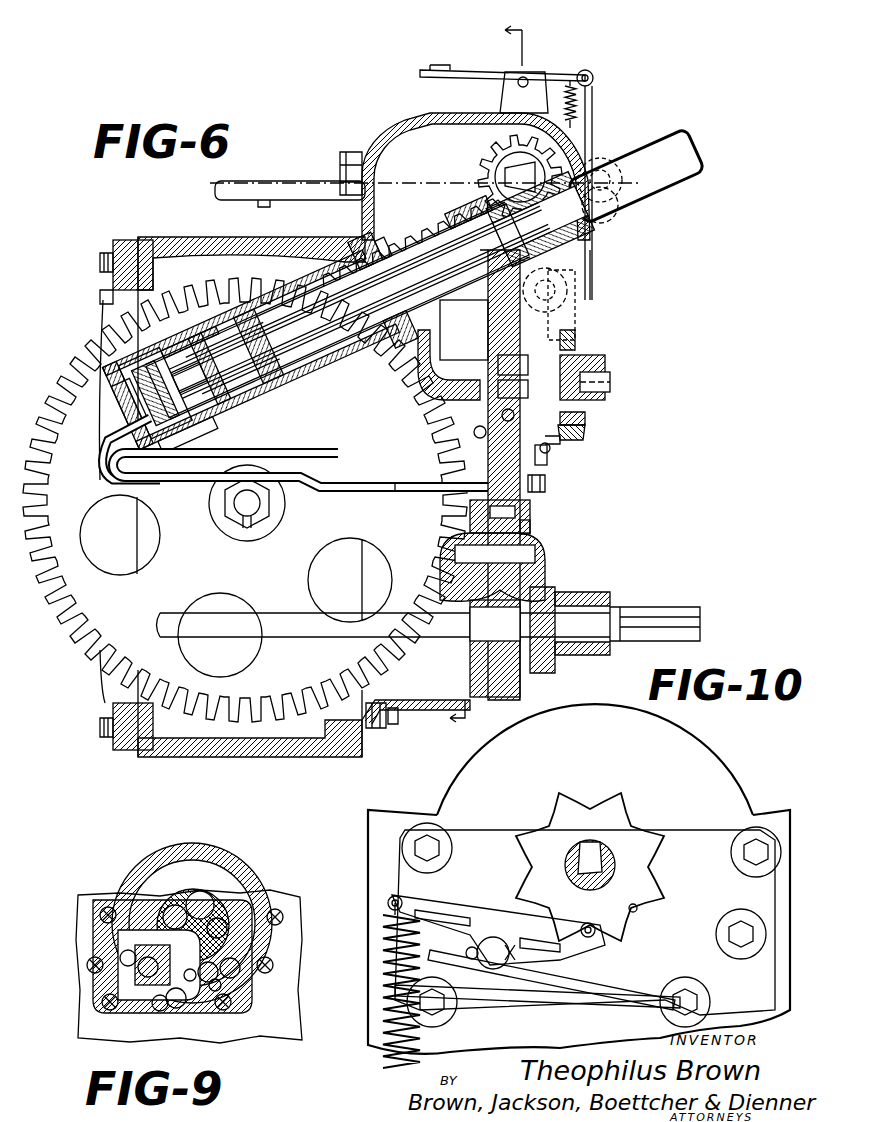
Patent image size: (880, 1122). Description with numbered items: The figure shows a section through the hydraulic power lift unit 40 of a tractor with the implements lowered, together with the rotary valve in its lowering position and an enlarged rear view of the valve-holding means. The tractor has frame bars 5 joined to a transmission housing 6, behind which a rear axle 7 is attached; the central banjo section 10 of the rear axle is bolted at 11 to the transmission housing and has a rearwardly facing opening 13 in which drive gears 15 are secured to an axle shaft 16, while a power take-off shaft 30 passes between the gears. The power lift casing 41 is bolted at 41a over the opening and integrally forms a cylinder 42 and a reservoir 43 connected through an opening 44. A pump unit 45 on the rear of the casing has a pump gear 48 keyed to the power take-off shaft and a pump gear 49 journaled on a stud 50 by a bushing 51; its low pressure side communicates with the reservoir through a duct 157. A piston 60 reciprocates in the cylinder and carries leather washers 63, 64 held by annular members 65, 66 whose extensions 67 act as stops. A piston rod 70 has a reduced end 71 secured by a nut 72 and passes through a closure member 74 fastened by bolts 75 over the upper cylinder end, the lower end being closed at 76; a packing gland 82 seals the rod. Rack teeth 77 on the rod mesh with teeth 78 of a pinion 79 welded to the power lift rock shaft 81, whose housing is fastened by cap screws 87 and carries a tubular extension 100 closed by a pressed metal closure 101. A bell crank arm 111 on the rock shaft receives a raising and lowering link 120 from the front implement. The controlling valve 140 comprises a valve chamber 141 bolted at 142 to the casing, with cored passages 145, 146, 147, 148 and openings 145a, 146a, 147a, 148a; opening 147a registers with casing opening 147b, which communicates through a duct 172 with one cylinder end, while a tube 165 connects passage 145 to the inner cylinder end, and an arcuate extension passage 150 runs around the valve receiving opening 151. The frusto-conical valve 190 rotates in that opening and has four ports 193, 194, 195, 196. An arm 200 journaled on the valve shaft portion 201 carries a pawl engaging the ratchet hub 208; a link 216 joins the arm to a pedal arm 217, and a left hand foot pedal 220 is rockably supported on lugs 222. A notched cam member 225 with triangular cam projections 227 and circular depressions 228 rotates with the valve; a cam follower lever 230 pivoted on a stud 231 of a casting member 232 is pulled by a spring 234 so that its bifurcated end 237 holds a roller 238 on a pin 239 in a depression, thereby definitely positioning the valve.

In FIG. 6, the frame bars 5 is at (494, 376).
In FIG. 6, the transmission housing 6 is at (100, 297).
In FIG. 6, the rear axle 7 is at (180, 226).
In FIG. 6, the banjo section 10 is at (208, 240).
In FIG. 6, the bolts 11 is at (100, 260).
In FIG. 6, the rearwardly facing opening 13 is at (372, 705).
In FIG. 6, the drive gears 15 is at (78, 605).
In FIG. 6, the axle shaft 16 is at (262, 502).
In FIG. 6, the power take-off shaft 30 is at (315, 636).
In FIG. 6, the hydraulic power lift unit 40 is at (405, 111).
In FIG. 6, the power lift casing 41 is at (410, 725).
In FIG. 6, the bolts 41a is at (393, 724).
In FIG. 6, the cylinder 42 is at (186, 345).
In FIG. 6, the reservoir 43 is at (395, 494).
In FIG. 6, the opening 44 is at (305, 405).
In FIG. 6, the pump unit 45 is at (573, 554).
In FIG. 6, the pump gear 48 is at (510, 658).
In FIG. 6, the pump gear 49 is at (515, 512).
In FIG. 6, the stud 50 is at (535, 560).
In FIG. 6, the bushing 51 is at (530, 527).
In FIG. 6, the piston 60 is at (222, 345).
In FIG. 6, the leather washer 63 is at (190, 455).
In FIG. 6, the leather washer 64 is at (300, 420).
In FIG. 6, the annular member 65 is at (175, 360).
In FIG. 6, the annular member 66 is at (245, 338).
In FIG. 6, the extension 67 is at (268, 352).
In FIG. 6, the piston rod 70 is at (340, 330).
In FIG. 6, the reduced end 71 is at (215, 388).
In FIG. 6, the nut 72 is at (125, 428).
In FIG. 6, the closure member 74 is at (395, 255).
In FIG. 6, the bolts 75 is at (408, 248).
In FIG. 6, the lower end closure 76 is at (160, 395).
In FIG. 6, the rack teeth 77 is at (452, 252).
In FIG. 6, the teeth 78 is at (505, 148).
In FIG. 6, the pinion 79 is at (470, 183).
In FIG. 6, the power lift rock shaft 81 is at (510, 172).
In FIG. 6, the packing gland 82 is at (462, 300).
In FIG. 6, the cap screws 87 is at (352, 160).
In FIG. 6, the tubular extension 100 is at (615, 198).
In FIG. 6, the pressed metal closure 101 is at (700, 140).
In FIG. 6, the bell crank arm 111 is at (604, 168).
In FIG. 6, the raising and lowering link 120 is at (300, 180).
In FIG. 6, the controlling valve 140 is at (562, 440).
In FIG. 6, the valve chamber 141 is at (540, 305).
In FIG. 6, the bolts 142 is at (546, 483).
In FIG. 9, the bolts 142 is at (100, 910).
In FIG. 10, the bolts 142 is at (752, 855).
In FIG. 9, the cored passage 145 is at (128, 900).
In FIG. 9, the opening 145a is at (177, 1008).
In FIG. 9, the cored passage 146 is at (120, 958).
In FIG. 9, the opening 146a is at (140, 970).
In FIG. 6, the cored passage 147 is at (550, 450).
In FIG. 9, the cored passage 147 is at (192, 982).
In FIG. 6, the opening 147a is at (474, 436).
In FIG. 9, the opening 147a is at (220, 990).
In FIG. 6, the registering opening 147b is at (502, 418).
In FIG. 9, the cored passage 148 is at (240, 962).
In FIG. 9, the opening 148a is at (218, 975).
In FIG. 6, the extension passage 150 is at (535, 300).
In FIG. 9, the extension passage 150 is at (232, 868).
In FIG. 6, the valve receiving opening 151 is at (464, 331).
In FIG. 6, the duct 157 is at (448, 510).
In FIG. 6, the tube 165 is at (340, 454).
In FIG. 6, the duct 172 is at (418, 388).
In FIG. 6, the valve 190 is at (552, 320).
In FIG. 9, the valve 190 is at (195, 890).
In FIG. 6, the port 193 is at (500, 390).
In FIG. 9, the port 193 is at (158, 1010).
In FIG. 6, the port 194 is at (500, 368).
In FIG. 9, the port 194 is at (173, 905).
In FIG. 9, the port 195 is at (200, 890).
In FIG. 9, the port 196 is at (255, 892).
In FIG. 6, the arm 200 is at (598, 366).
In FIG. 6, the shaft portion 201 is at (610, 382).
In FIG. 10, the shaft portion 201 is at (608, 870).
In FIG. 10, the ratchet hub 208 is at (600, 850).
In FIG. 6, the link 216 is at (594, 122).
In FIG. 6, the arm 217 is at (570, 72).
In FIG. 6, the left hand foot pedal 220 is at (515, 74).
In FIG. 6, the lugs 222 is at (510, 98).
In FIG. 6, the notched cam member 225 is at (580, 348).
In FIG. 10, the notched cam member 225 is at (572, 812).
In FIG. 10, the cam projections 227 is at (557, 808).
In FIG. 10, the depressions 228 is at (532, 867).
In FIG. 10, the cam follower lever 230 is at (497, 930).
In FIG. 10, the stud 231 is at (488, 962).
In FIG. 6, the casting member 232 is at (548, 452).
In FIG. 10, the casting member 232 is at (572, 1003).
In FIG. 10, the spring 234 is at (378, 1020).
In FIG. 6, the end 237 is at (586, 433).
In FIG. 10, the end 237 is at (585, 955).
In FIG. 10, the roller 238 is at (630, 909).
In FIG. 6, the pin 239 is at (587, 418).
In FIG. 10, the pin 239 is at (585, 924).